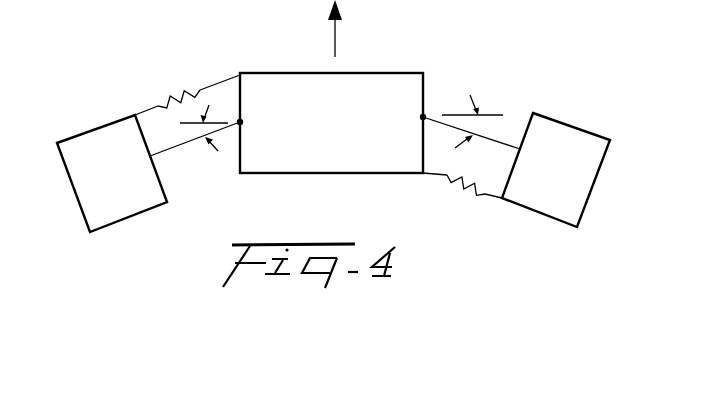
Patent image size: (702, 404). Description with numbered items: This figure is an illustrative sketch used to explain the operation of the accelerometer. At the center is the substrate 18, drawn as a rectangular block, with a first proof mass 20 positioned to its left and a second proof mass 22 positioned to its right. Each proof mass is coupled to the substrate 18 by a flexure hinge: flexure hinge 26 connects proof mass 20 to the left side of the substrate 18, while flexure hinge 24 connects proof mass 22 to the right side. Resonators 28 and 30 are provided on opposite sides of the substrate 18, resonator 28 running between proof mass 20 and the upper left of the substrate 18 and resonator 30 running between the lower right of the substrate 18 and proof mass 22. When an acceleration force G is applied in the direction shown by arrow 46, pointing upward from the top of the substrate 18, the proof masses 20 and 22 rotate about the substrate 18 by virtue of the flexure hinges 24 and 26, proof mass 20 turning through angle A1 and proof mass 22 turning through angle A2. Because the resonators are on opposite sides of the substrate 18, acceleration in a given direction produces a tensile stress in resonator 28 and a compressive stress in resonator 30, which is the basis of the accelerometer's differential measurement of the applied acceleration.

The substrate 18 is at (319, 157).
The proof mass 20 is at (78, 147).
The proof mass 22 is at (579, 136).
The flexure hinge 24 is at (463, 125).
The flexure hinge 26 is at (207, 128).
The resonator 28 is at (181, 92).
The resonator 30 is at (464, 192).
The arrow 46 is at (338, 33).
The angle A1 is at (184, 132).
The angle A2 is at (492, 132).